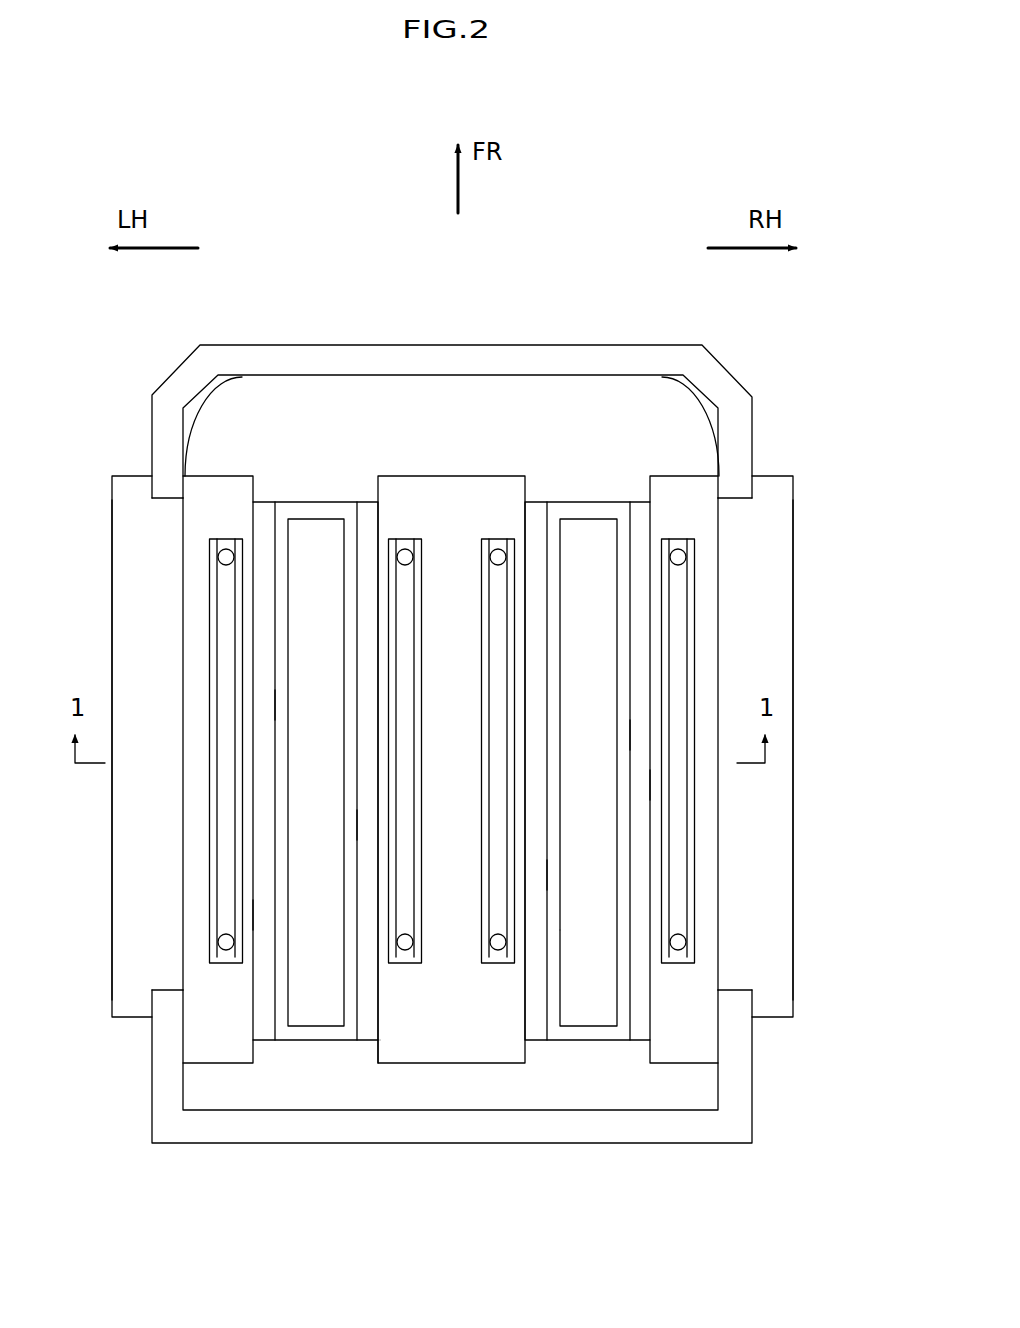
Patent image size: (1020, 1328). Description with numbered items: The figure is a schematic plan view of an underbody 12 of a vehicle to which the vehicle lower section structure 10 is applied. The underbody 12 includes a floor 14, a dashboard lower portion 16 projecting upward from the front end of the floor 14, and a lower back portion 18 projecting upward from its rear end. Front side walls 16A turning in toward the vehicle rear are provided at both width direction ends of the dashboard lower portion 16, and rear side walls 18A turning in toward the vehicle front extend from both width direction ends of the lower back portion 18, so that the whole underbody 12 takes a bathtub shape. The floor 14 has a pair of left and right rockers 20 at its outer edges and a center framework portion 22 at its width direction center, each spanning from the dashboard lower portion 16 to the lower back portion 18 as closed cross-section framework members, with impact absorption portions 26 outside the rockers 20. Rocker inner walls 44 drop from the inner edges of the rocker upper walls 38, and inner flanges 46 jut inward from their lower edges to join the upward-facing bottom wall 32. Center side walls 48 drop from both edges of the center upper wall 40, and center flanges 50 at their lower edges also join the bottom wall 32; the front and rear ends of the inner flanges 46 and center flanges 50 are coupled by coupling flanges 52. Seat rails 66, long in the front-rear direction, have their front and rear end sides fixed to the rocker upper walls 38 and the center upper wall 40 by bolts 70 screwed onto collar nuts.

The vehicle lower section structure 10 is at (482, 416).
The underbody 12 is at (758, 374).
The floor 14 is at (736, 592).
The dashboard lower portion 16 is at (389, 364).
The front side walls 16A is at (163, 462).
The lower back portion 18 is at (667, 1156).
The rear side walls 18A is at (163, 1078).
The rockers 20 is at (130, 560).
The center framework portion 22 is at (532, 534).
The impact absorption portions 26 is at (102, 595).
The bottom wall 32 is at (573, 943).
The rocker upper walls 38 is at (167, 973).
The center upper wall 40 is at (436, 1053).
The rocker inner walls 44 is at (263, 917).
The inner flanges 46 is at (283, 707).
The center side walls 48 is at (367, 823).
The center flanges 50 is at (350, 735).
The coupling flanges 52 is at (333, 510).
The seat rails 66 is at (222, 540).
The bolts 70 is at (222, 557).